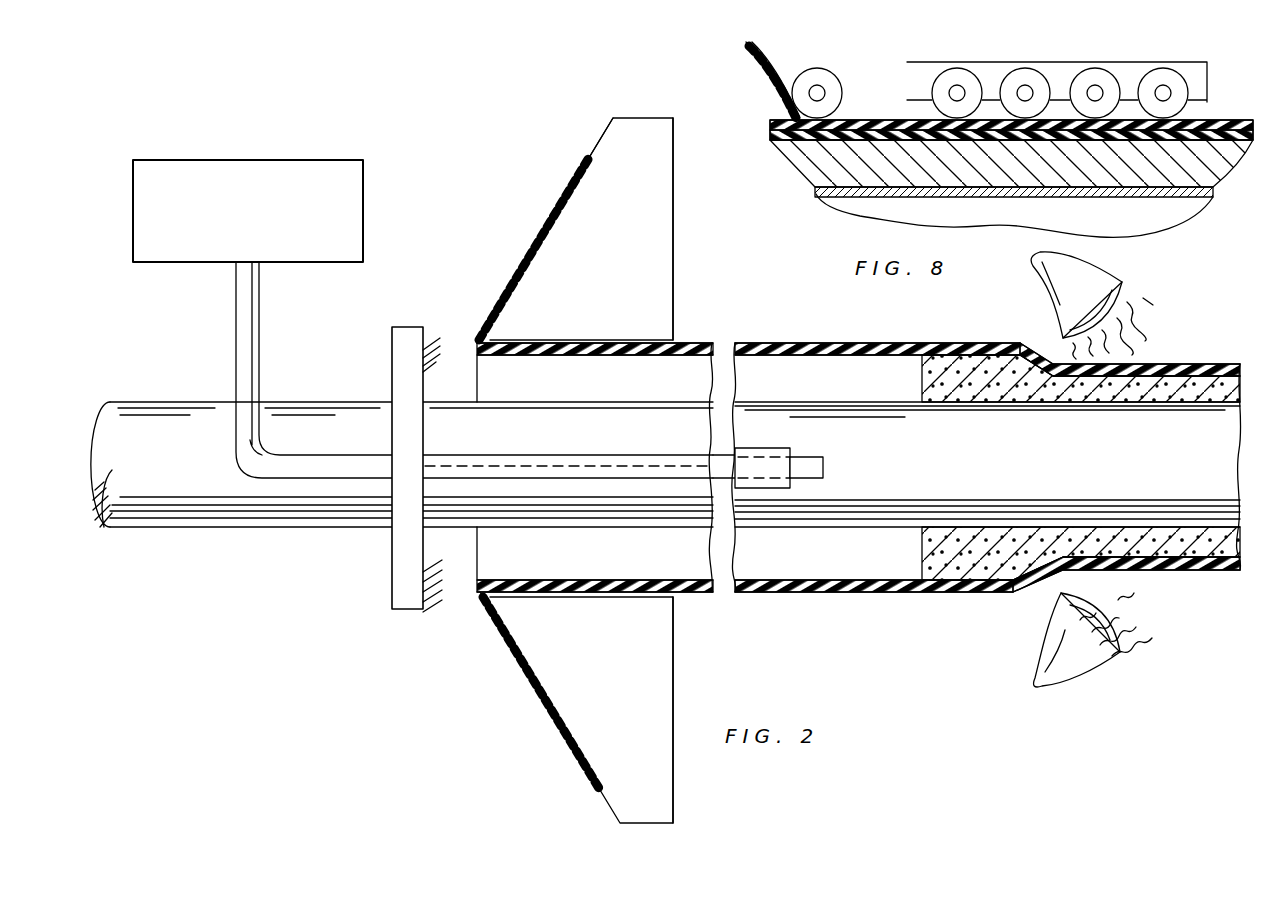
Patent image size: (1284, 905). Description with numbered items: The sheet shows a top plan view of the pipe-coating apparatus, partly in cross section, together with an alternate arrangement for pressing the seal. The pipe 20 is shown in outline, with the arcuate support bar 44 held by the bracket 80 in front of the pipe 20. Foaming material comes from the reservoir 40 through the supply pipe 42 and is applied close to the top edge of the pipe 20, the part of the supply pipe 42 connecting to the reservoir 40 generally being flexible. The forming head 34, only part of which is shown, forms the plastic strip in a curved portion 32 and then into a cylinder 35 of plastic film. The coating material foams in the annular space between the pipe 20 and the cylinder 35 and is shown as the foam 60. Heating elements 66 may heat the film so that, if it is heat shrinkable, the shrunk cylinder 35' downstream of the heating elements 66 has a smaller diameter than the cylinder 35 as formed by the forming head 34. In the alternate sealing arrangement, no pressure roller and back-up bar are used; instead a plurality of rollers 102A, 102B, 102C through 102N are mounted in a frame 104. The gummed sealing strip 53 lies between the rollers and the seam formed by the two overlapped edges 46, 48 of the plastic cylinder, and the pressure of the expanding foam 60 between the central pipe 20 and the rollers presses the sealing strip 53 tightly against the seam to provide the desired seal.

In FIG. 2, the pipe 20 is at (215, 400).
In FIG. 8, the pipe 20 is at (1172, 198).
In FIG. 2, the curved portion 32 is at (535, 237).
In FIG. 2, the forming head 34 is at (673, 228).
In FIG. 2, the cylinder of plastic film 35 is at (748, 445).
In FIG. 2, the shrunk cylinder 35' is at (1126, 457).
In FIG. 2, the reservoir 40 is at (363, 168).
In FIG. 2, the supply pipe 42 is at (261, 330).
In FIG. 2, the arcuate support bar 44 is at (760, 448).
In FIG. 8, the overlapped edge 46 is at (800, 162).
In FIG. 8, the overlapped edge 48 is at (768, 124).
In FIG. 8, the sealing strip 53 is at (772, 72).
In FIG. 2, the foam 60 is at (985, 355).
In FIG. 8, the foam 60 is at (1200, 168).
In FIG. 2, the heating elements 66 is at (1078, 275).
In FIG. 2, the bracket 80 is at (425, 345).
In FIG. 8, the roller 102A is at (957, 70).
In FIG. 8, the roller 102B is at (1024, 75).
In FIG. 8, the roller 102C is at (1105, 78).
In FIG. 8, the roller 102N is at (1163, 72).
In FIG. 8, the frame 104 is at (1208, 70).